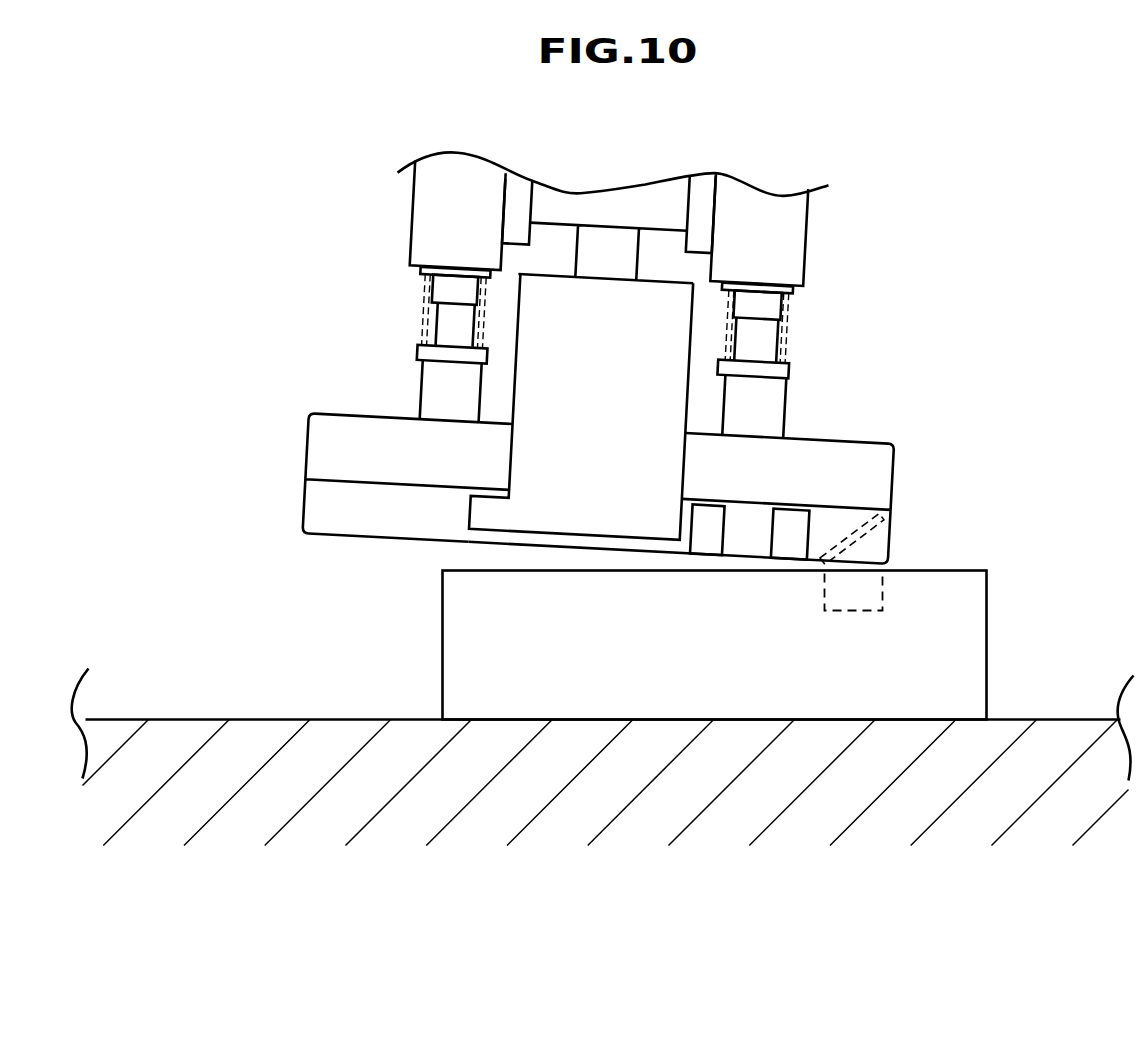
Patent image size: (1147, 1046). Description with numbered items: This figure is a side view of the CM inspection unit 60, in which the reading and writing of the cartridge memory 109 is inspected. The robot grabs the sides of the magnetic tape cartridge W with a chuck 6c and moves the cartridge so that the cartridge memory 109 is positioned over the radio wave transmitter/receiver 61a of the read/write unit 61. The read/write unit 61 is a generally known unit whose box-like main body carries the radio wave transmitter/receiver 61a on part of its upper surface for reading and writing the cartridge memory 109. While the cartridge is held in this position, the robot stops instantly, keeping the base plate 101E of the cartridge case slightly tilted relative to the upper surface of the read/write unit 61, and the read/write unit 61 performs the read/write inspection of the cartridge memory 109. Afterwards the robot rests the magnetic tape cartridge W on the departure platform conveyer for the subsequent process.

The chuck device 60 is at (867, 227).
The chuck 6c is at (637, 400).
The magnetic tape cartridge W is at (827, 433).
The cartridge memory 109 is at (857, 512).
The radio wave transmitter/receiver 61a is at (883, 590).
The read/write unit 61 is at (987, 660).
The base plate 101E is at (346, 540).